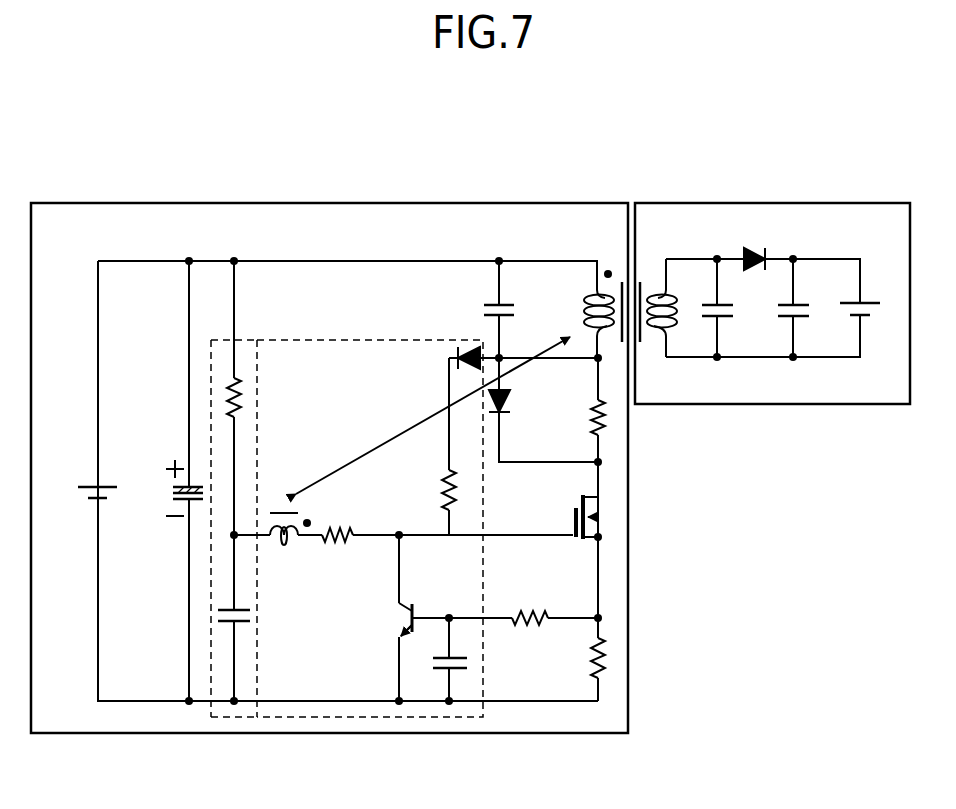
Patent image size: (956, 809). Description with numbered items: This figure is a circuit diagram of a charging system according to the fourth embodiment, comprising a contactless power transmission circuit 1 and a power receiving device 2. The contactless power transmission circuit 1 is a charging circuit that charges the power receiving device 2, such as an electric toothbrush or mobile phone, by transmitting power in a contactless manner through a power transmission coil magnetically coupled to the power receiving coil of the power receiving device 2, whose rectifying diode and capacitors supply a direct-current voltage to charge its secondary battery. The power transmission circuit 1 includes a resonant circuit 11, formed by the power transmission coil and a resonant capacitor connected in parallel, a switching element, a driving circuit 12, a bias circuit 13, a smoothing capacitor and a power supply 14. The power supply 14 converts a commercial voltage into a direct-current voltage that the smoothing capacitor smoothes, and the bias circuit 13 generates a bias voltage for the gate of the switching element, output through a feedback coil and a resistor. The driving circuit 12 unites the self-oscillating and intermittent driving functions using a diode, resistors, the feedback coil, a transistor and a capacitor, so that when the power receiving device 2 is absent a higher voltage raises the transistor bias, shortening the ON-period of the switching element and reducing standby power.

The contactless power transmission circuit 1 is at (467, 203).
The power receiving device 2 is at (860, 203).
The resonant circuit 11 is at (548, 250).
The driving circuit 12 is at (365, 340).
The bias circuit 13 is at (252, 340).
The power supply 14 is at (105, 485).